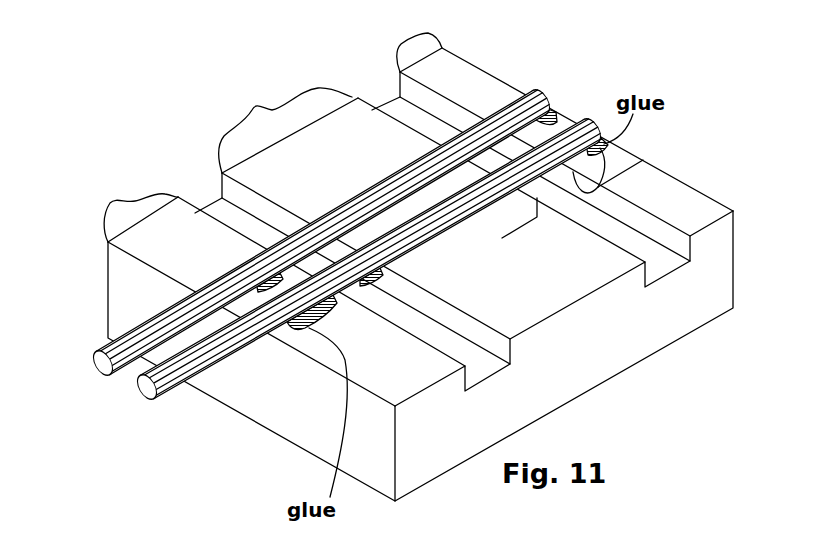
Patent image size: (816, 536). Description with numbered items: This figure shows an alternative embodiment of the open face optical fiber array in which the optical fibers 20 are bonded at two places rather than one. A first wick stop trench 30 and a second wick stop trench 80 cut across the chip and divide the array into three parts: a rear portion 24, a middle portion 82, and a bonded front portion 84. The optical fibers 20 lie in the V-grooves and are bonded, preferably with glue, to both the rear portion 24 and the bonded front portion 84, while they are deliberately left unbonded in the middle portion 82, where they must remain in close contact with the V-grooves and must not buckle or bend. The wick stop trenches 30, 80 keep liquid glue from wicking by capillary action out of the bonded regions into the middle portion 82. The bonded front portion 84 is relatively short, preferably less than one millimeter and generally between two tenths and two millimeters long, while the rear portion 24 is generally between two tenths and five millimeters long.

The optical fibers 20 is at (163, 383).
The rear portion 24 is at (110, 200).
The wick stop trench 30 is at (217, 209).
The second wick stop trench 80 is at (395, 112).
The middle portion 82 is at (254, 108).
The bonded front portion 84 is at (401, 43).